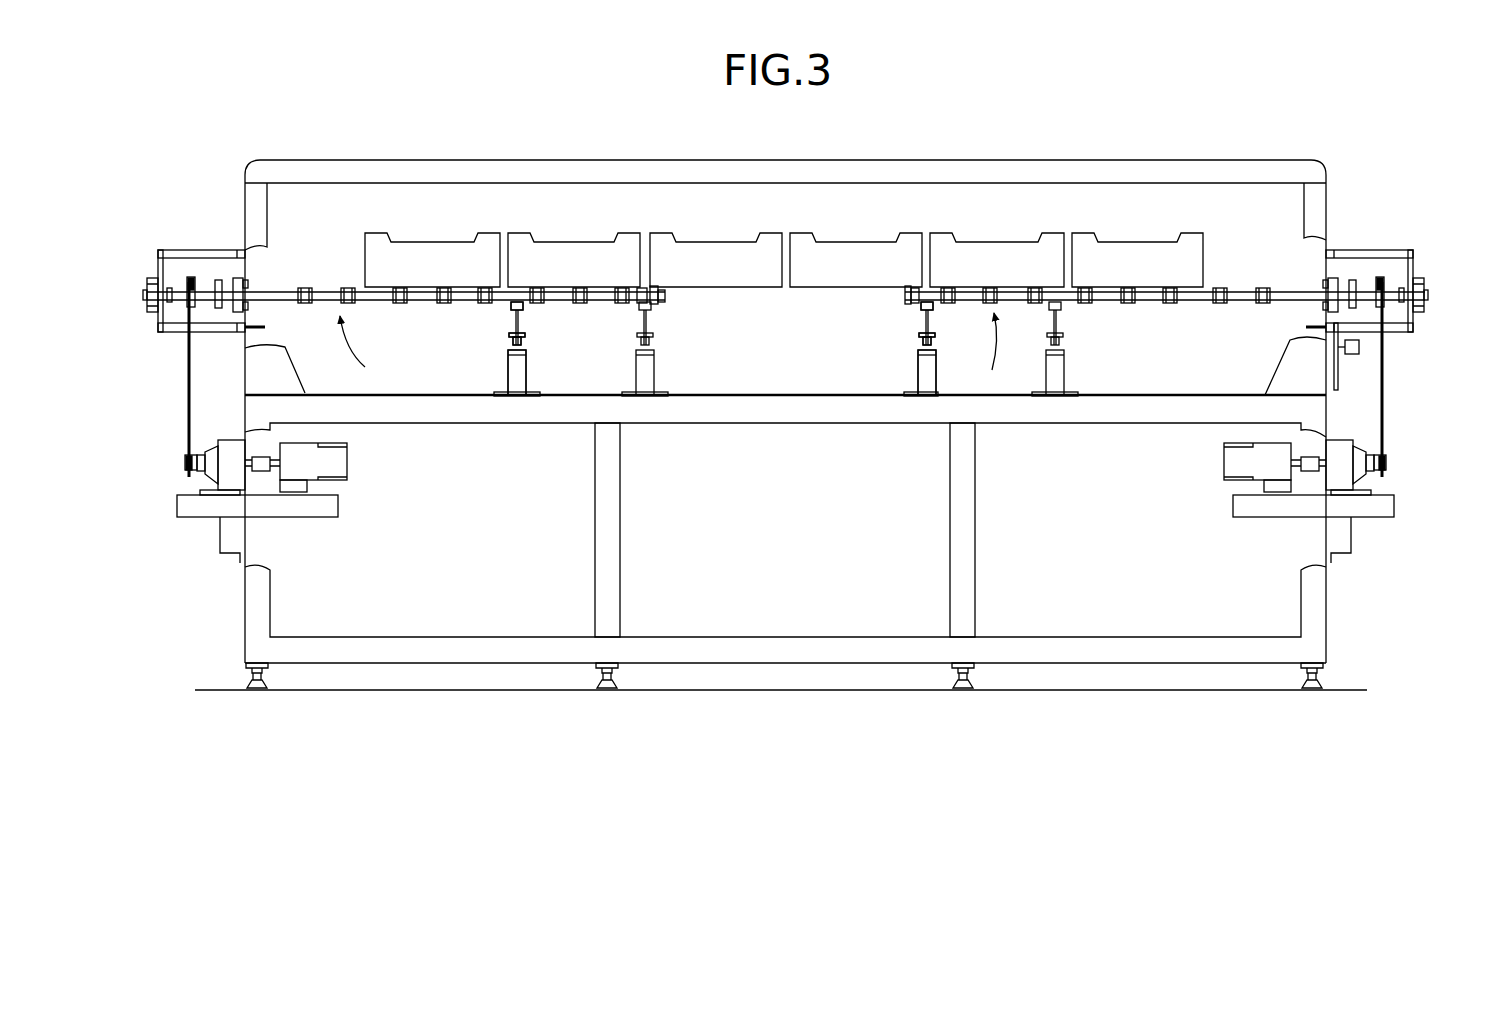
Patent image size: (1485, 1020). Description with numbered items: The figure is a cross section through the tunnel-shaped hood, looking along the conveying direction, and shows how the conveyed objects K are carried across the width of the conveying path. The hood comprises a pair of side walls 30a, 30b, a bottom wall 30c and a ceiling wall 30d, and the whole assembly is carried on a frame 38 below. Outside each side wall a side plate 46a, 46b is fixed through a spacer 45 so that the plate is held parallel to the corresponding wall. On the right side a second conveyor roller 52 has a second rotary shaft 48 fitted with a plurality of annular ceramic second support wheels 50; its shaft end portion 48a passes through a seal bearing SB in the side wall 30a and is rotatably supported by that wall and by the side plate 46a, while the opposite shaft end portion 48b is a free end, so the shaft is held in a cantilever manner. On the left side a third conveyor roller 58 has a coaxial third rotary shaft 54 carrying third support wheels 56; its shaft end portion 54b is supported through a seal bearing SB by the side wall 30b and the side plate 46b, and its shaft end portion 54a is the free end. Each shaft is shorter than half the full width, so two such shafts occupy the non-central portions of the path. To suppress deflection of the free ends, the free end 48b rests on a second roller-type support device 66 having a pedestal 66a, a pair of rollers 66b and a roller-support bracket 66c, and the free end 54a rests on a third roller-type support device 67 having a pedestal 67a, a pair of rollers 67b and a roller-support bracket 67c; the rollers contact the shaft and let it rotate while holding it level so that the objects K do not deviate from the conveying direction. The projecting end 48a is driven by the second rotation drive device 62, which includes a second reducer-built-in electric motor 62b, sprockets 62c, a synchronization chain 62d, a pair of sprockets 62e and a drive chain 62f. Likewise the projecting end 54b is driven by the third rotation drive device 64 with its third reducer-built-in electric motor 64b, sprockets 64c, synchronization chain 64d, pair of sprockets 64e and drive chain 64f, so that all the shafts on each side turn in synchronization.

The side wall 30a is at (1323, 210).
The side wall 30b is at (267, 213).
The bottom wall 30c is at (785, 397).
The ceiling wall 30d is at (785, 183).
The frame 38 is at (607, 540).
The spacer 45 is at (172, 250).
The side plate 46a is at (1415, 282).
The side plate 46b is at (150, 280).
The second rotary shaft 48 is at (1105, 299).
The shaft end portion 48a is at (1393, 298).
The shaft end portion 48b is at (905, 295).
The second support wheel 50 is at (1168, 302).
The second conveyor roller 52 is at (988, 354).
The third rotary shaft 54 is at (373, 300).
The shaft end portion 54a is at (665, 297).
The shaft end portion 54b is at (173, 298).
The third support wheel 56 is at (445, 302).
The third conveyor roller 58 is at (362, 350).
The second rotation drive device 62 is at (1310, 373).
The second reducer-built-in electric motor 62b is at (1240, 465).
The sprocket 62c is at (1347, 280).
The synchronization chain 62d is at (1353, 280).
The sprocket 62e is at (1383, 332).
The drive chain 62f is at (1384, 410).
The third rotation drive device 64 is at (262, 373).
The third reducer-built-in electric motor 64b is at (330, 465).
The sprocket 64c is at (218, 280).
The synchronization chain 64d is at (190, 277).
The sprocket 64e is at (188, 332).
The drive chain 64f is at (188, 413).
The second roller-type support device 66 is at (851, 355).
The pedestal 66a is at (918, 360).
The roller 66b is at (930, 309).
The roller-support bracket 66c is at (921, 333).
The third roller-type support device 67 is at (540, 366).
The pedestal 67a is at (507, 357).
The roller 67b is at (520, 309).
The roller-support bracket 67c is at (510, 322).
The object K is at (447, 247).
The seal bearing SB is at (245, 290).